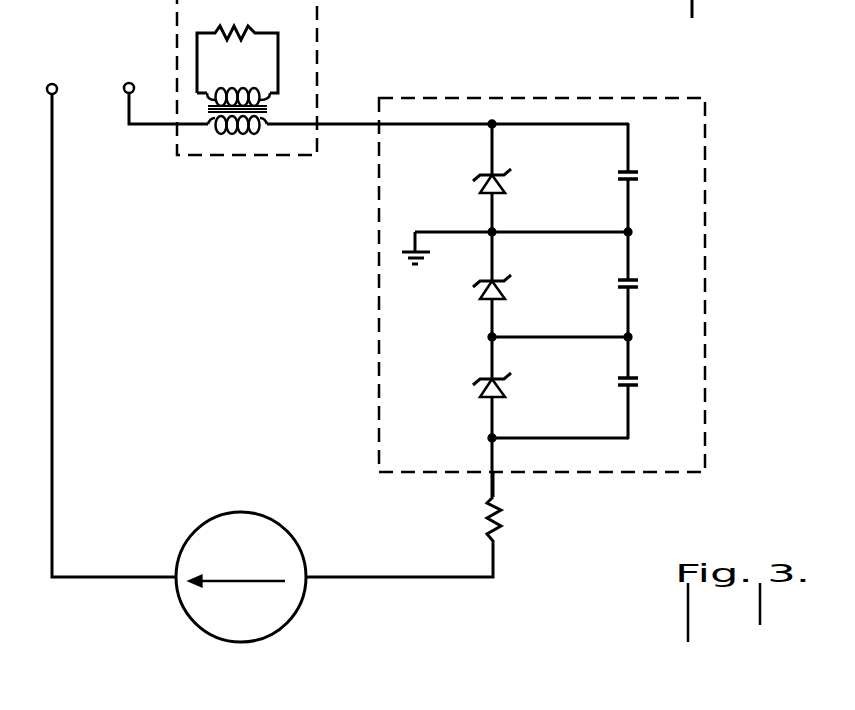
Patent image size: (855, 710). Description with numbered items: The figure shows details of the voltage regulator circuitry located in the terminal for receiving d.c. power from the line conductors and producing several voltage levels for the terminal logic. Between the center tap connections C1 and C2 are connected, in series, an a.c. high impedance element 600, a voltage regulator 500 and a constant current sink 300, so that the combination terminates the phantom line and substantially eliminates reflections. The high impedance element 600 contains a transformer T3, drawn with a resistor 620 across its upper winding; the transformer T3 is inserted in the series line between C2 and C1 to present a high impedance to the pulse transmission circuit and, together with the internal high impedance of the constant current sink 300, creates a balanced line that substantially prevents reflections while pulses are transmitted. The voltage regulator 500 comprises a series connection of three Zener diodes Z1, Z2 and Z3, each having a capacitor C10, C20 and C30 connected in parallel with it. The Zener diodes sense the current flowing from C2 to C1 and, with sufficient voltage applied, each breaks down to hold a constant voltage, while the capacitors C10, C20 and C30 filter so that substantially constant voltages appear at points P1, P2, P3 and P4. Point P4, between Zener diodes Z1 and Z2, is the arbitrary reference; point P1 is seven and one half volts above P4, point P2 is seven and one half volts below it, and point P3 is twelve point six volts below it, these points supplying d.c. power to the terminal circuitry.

The a.c. high impedance element 600 is at (317, 37).
The resistor 620 is at (237, 46).
The transformer T3 is at (255, 111).
The voltage regulator 500 is at (705, 389).
The constant current sink 300 is at (317, 518).
The center tap connection C1 is at (106, 320).
The center tap connection C2 is at (162, 94).
The Zener diode Z1 is at (497, 176).
The Zener diode Z2 is at (501, 284).
The Zener diode Z3 is at (501, 383).
The capacitor C10 is at (647, 178).
The capacitor C20 is at (652, 287).
The capacitor C30 is at (650, 386).
The point P1 is at (661, 129).
The point P2 is at (659, 332).
The point P3 is at (663, 441).
The point P4 is at (488, 229).